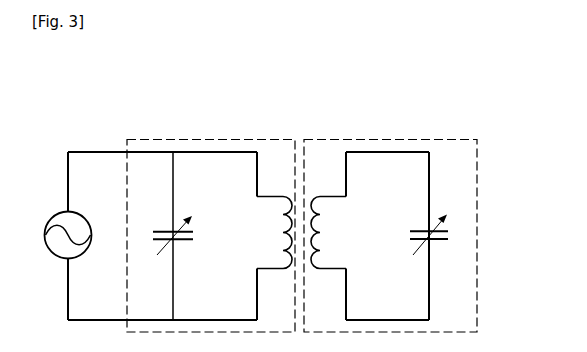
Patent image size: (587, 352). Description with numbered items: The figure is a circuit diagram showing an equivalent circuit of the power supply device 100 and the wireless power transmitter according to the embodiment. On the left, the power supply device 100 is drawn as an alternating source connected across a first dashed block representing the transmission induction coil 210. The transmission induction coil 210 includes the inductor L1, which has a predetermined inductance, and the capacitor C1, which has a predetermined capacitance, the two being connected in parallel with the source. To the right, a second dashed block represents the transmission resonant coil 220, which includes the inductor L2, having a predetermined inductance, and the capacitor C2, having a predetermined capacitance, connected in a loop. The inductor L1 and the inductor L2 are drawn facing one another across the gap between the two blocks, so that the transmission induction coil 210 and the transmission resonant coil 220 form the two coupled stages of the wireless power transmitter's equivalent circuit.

The power supply device 100 is at (49, 213).
The transmission induction coil 210 is at (211, 212).
The transmission resonant coil 220 is at (390, 212).
The capacitor C1 is at (164, 236).
The capacitor C2 is at (439, 236).
The inductor L1 is at (274, 236).
The inductor L2 is at (328, 236).